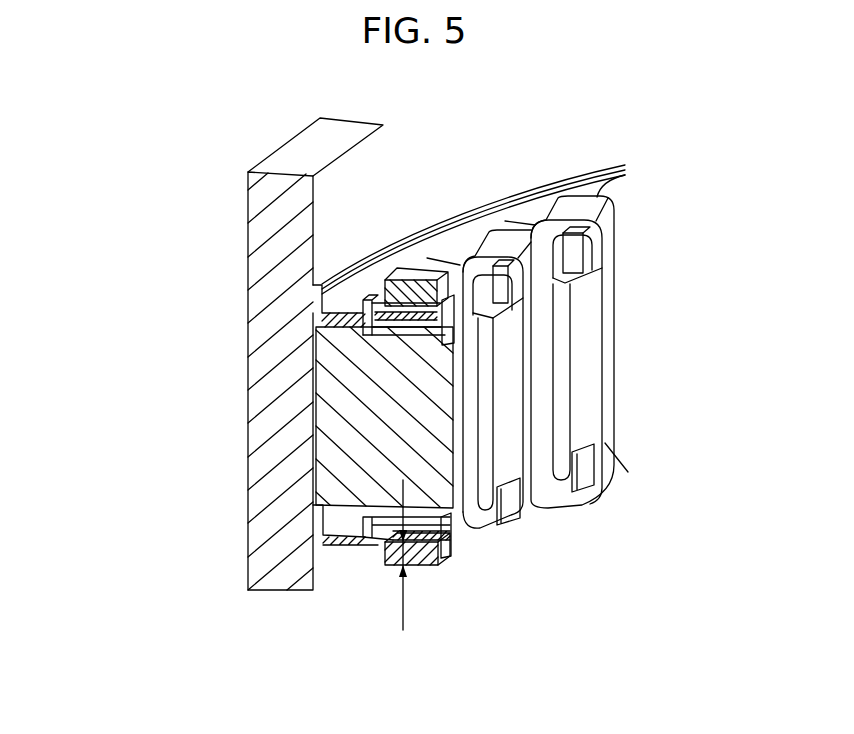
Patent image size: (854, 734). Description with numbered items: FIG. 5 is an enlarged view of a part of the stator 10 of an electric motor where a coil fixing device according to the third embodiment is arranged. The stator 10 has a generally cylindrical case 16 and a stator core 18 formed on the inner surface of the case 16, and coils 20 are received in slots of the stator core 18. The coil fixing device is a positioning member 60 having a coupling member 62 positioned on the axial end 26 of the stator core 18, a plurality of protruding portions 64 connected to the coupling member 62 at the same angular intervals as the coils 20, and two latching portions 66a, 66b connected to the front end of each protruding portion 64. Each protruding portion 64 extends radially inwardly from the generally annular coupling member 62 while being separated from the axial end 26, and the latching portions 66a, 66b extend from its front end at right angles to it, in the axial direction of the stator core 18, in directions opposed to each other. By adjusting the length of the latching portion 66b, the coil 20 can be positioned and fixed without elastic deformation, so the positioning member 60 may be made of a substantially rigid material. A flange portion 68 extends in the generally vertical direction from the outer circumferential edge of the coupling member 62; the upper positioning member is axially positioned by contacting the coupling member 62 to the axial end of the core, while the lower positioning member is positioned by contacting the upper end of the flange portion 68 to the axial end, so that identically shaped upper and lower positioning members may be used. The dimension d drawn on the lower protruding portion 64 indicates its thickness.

The stator 10 is at (210, 244).
The case 16 is at (303, 147).
The stator core 18 is at (343, 437).
The coil 20 is at (462, 247).
The axial end 26 is at (430, 325).
The positioning member 60 is at (410, 190).
The coupling member 62 is at (358, 299).
The protruding portion 64 is at (450, 308).
The latching portion 66a is at (450, 330).
The latching portion 66b is at (454, 305).
The flange portion 68 is at (362, 255).
The thickness dimension d is at (392, 556).